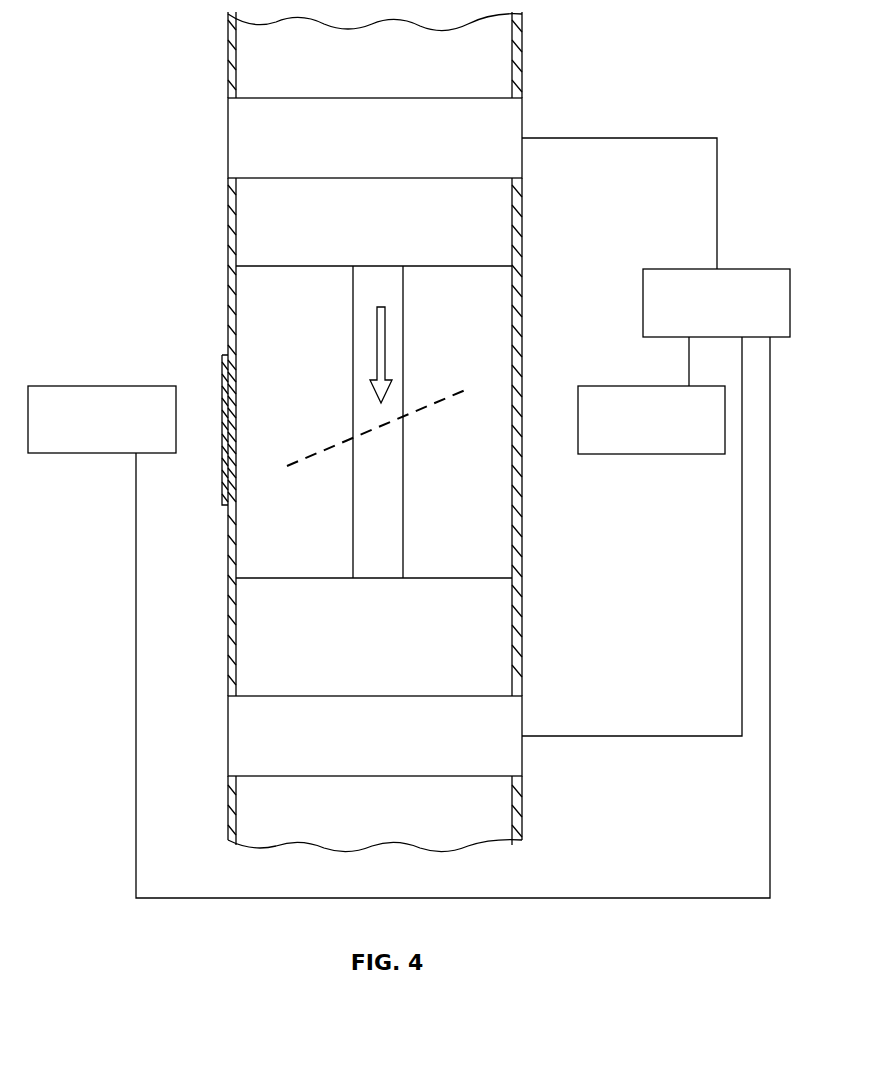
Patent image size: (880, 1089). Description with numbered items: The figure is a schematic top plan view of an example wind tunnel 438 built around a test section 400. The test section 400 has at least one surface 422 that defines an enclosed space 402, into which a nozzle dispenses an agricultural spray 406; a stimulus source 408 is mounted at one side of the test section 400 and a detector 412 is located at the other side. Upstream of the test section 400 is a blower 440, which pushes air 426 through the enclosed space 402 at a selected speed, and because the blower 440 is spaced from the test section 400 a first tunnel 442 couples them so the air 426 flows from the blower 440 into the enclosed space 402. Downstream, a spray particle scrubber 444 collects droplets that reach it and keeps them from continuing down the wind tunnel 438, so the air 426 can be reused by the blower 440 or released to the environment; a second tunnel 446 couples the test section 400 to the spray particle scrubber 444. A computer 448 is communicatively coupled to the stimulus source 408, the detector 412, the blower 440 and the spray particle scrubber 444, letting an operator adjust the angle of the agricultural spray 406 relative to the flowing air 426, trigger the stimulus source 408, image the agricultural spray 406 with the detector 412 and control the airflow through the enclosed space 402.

The test section 400 is at (533, 294).
The enclosed space 402 is at (268, 290).
The agricultural spray 406 is at (310, 455).
The stimulus source 408 is at (144, 386).
The detector 412 is at (627, 386).
The surface 422 is at (228, 300).
The air 426 is at (377, 334).
The wind tunnel 438 is at (672, 54).
The blower 440 is at (228, 136).
The first tunnel 442 is at (288, 226).
The spray particle scrubber 444 is at (228, 727).
The second tunnel 446 is at (286, 616).
The computer 448 is at (748, 269).